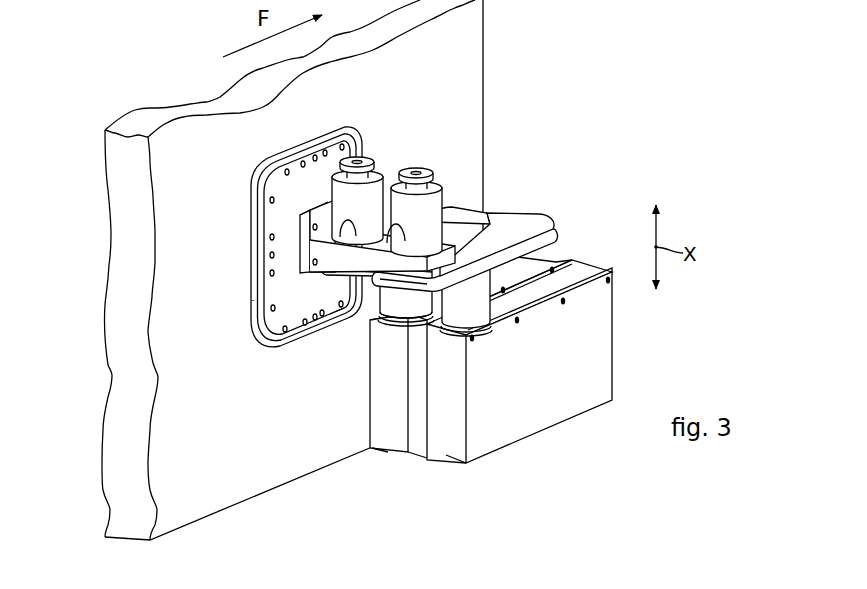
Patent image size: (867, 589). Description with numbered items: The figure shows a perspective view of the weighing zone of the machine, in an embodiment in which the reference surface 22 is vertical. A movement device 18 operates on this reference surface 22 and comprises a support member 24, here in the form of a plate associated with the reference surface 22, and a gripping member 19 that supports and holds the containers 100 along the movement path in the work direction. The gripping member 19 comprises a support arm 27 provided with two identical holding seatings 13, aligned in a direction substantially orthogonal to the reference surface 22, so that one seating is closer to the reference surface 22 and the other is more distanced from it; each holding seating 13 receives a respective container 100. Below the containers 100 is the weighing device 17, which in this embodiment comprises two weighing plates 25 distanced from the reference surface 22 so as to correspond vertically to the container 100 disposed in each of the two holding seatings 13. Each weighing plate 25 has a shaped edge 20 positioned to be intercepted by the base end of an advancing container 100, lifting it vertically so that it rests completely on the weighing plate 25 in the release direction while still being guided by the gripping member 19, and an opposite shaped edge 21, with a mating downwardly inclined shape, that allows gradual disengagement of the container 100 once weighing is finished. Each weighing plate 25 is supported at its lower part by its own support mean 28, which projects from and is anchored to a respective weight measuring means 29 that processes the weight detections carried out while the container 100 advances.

The holding seating 13 is at (399, 228).
The weighing device 17 is at (579, 256).
The movement device 18 is at (364, 126).
The gripping member 19 is at (316, 294).
The shaped edge 20 is at (321, 272).
The shaped edge 21 is at (460, 210).
The reference surface 22 is at (470, 42).
The support member 24 is at (278, 185).
The weighing plate 25 is at (485, 206).
The support arm 27 is at (265, 341).
The support mean 28 is at (406, 298).
The weight measuring means 29 is at (388, 448).
The container 100 is at (377, 157).